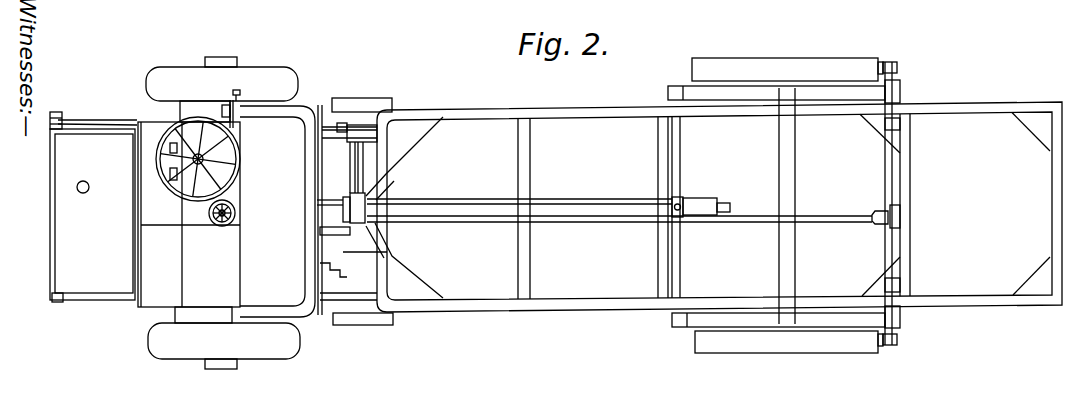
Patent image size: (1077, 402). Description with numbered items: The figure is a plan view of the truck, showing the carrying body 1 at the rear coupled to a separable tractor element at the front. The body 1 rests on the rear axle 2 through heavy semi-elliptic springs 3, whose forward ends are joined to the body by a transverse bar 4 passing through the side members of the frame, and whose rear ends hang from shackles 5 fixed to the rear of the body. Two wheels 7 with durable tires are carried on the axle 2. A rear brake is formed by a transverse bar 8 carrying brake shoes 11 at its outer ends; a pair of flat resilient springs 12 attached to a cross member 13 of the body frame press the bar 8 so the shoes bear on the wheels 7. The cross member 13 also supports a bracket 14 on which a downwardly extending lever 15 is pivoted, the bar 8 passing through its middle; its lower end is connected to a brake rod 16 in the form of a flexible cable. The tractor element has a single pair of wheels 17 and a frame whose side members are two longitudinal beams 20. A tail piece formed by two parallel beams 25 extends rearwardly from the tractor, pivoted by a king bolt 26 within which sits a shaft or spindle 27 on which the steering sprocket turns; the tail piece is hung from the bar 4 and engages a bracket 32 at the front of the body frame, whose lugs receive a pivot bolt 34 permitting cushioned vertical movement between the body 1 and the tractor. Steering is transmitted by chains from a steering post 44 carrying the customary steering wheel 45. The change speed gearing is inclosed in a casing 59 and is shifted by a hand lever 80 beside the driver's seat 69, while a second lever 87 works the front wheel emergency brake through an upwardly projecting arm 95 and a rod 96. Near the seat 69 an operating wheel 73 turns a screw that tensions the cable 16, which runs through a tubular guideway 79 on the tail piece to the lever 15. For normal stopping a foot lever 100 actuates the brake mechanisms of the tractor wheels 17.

The carrying body 1 is at (599, 112).
The rear axle 2 is at (796, 195).
The springs 3 is at (750, 93).
The bar 4 is at (681, 250).
The shackles 5 is at (901, 90).
The wheels 7 is at (830, 62).
The bar 8 is at (885, 167).
The brake shoes 11 is at (897, 67).
The springs 12 is at (900, 128).
The cross member 13 is at (910, 170).
The bracket 14 is at (886, 228).
The lever 15 is at (901, 215).
The brake rod 16 is at (741, 223).
The wheels 17 is at (223, 213).
The beams 20 is at (337, 140).
The beams 25 is at (494, 192).
The king bolt 26 is at (713, 196).
The shaft or spindle 27 is at (682, 200).
The bracket 32 is at (381, 182).
The pivot bolt 34 is at (365, 222).
The steering post 44 is at (203, 162).
The steering wheel 45 is at (181, 178).
The casing 59 is at (362, 258).
The driver's seat 69 is at (226, 211).
The operating wheel 73 is at (220, 228).
The tubular guideway 79 is at (401, 223).
The hand lever 80 is at (210, 100).
The second lever 87 is at (239, 93).
The arm 95 is at (56, 303).
The rod 96 is at (89, 301).
The foot lever 100 is at (168, 145).